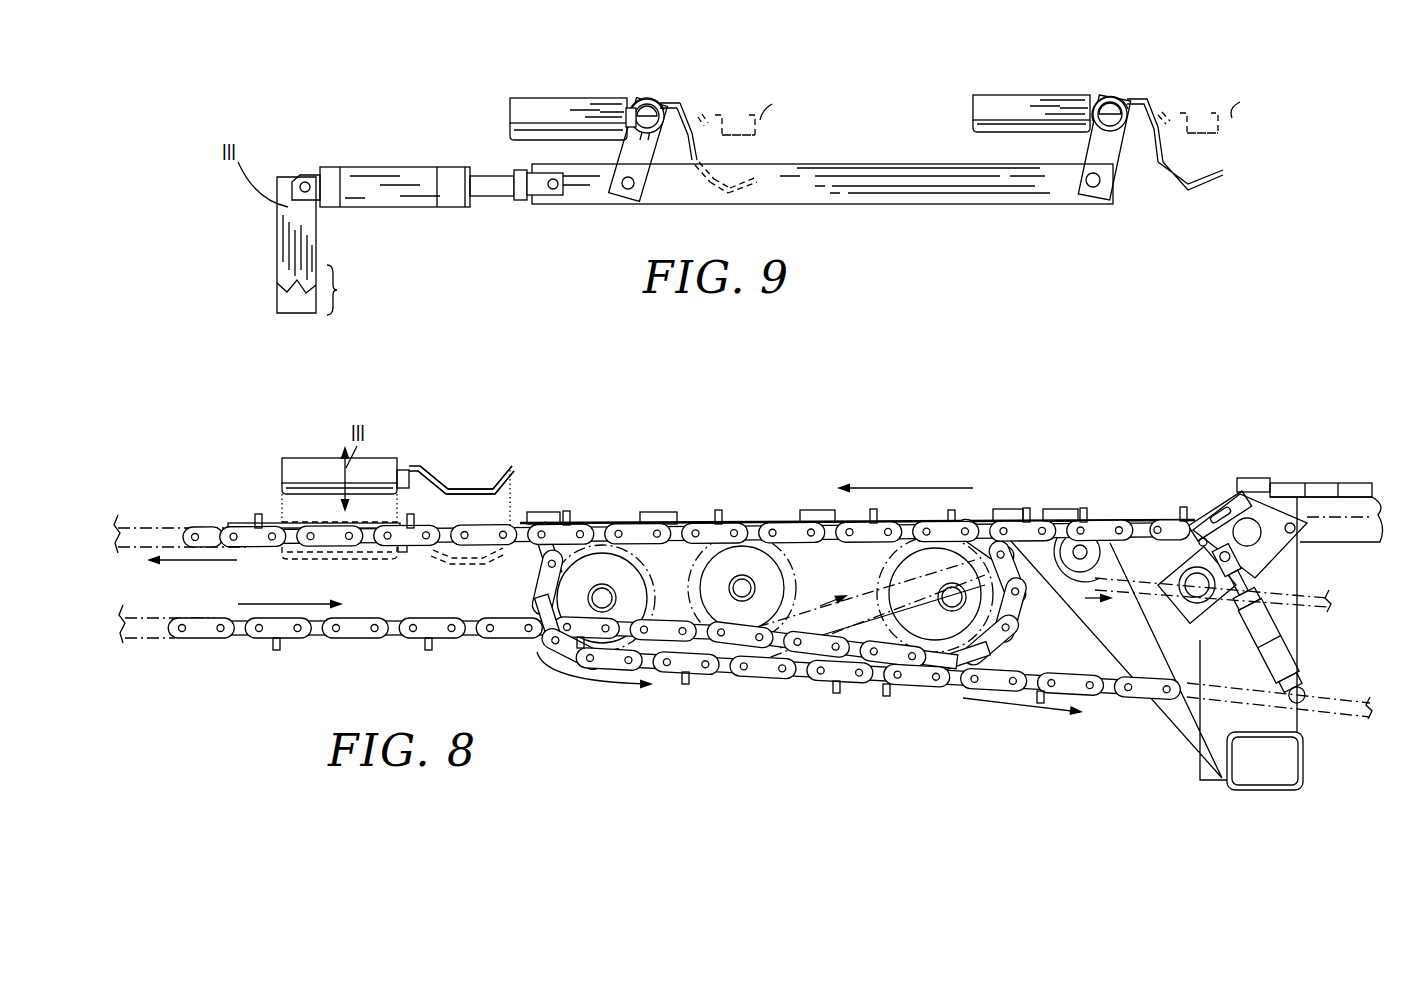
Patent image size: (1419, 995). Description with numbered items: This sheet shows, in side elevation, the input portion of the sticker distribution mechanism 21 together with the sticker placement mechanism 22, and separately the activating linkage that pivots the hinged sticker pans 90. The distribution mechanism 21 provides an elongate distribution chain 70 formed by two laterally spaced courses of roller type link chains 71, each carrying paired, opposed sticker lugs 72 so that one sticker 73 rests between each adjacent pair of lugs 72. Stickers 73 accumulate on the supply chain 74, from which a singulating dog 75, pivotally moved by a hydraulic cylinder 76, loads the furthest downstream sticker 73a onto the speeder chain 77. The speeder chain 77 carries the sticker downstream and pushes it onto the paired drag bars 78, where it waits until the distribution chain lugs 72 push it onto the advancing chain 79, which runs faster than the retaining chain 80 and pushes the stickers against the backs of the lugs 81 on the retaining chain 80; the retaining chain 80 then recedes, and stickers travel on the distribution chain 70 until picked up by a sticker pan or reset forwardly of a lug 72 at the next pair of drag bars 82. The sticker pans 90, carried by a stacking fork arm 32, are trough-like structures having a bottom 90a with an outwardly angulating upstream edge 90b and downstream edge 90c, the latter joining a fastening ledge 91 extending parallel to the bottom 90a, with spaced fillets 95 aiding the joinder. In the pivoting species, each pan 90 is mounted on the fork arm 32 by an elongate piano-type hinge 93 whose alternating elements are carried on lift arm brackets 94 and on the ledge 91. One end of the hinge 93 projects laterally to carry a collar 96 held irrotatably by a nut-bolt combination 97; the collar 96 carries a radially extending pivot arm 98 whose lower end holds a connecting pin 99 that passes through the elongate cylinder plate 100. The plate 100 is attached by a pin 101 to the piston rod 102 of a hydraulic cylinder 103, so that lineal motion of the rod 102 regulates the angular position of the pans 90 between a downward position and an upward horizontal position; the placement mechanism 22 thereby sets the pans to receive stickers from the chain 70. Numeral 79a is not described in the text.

In FIG. 8, the sticker distribution mechanism 21 is at (158, 524).
In FIG. 9, the sticker placement mechanism 22 is at (785, 110).
In FIG. 8, the sticker placement mechanism 22 is at (502, 462).
In FIG. 9, the stacking fork arm 32 is at (582, 108).
In FIG. 8, the stacking fork arm 32 is at (323, 468).
In FIG. 8, the distribution chain 70 is at (140, 612).
In FIG. 8, the roller type link chains 71 is at (365, 620).
In FIG. 8, the sticker lugs 72 is at (570, 513).
In FIG. 9, the stickers 73 is at (733, 118).
In FIG. 8, the stickers 73 is at (1355, 487).
In FIG. 8, the furthest downstream sticker 73a is at (1258, 478).
In FIG. 8, the supply chain 74 is at (1380, 524).
In FIG. 8, the singulating dog 75 is at (1278, 535).
In FIG. 8, the hydraulic cylinder 76 is at (1272, 635).
In FIG. 8, the speeder chain 77 is at (1130, 580).
In FIG. 8, the drag bars 78 is at (1105, 530).
In FIG. 8, the advancing chain 79 is at (892, 598).
In FIG. 8, the intermediate sprocket 79a is at (948, 510).
In FIG. 8, the retaining chain 80 is at (757, 664).
In FIG. 8, the lugs 81 is at (642, 511).
In FIG. 8, the drag bars 82 is at (278, 525).
In FIG. 9, the sticker pans 90 is at (1172, 185).
In FIG. 8, the sticker pans 90 is at (508, 468).
In FIG. 9, the bottom 90a is at (710, 190).
In FIG. 8, the bottom 90a is at (476, 488).
In FIG. 9, the upstream edge 90b is at (748, 190).
In FIG. 8, the upstream edge 90b is at (517, 488).
In FIG. 9, the downstream edge 90c is at (697, 157).
In FIG. 8, the downstream edge 90c is at (430, 478).
In FIG. 9, the fastening ledge 91 is at (682, 104).
In FIG. 8, the fastening ledge 91 is at (407, 468).
In FIG. 9, the piano-type hinge 93 is at (660, 108).
In FIG. 9, the lift arm brackets 94 is at (634, 108).
In FIG. 9, the fillets 95 is at (696, 167).
In FIG. 8, the fillets 95 is at (412, 484).
In FIG. 9, the collar 96 is at (655, 99).
In FIG. 9, the nut-bolt combination 97 is at (634, 127).
In FIG. 9, the pivot arm 98 is at (645, 160).
In FIG. 9, the connecting pin 99 is at (622, 193).
In FIG. 9, the cylinder plate 100 is at (973, 183).
In FIG. 9, the pin 101 is at (550, 182).
In FIG. 9, the piston rod 102 is at (500, 182).
In FIG. 9, the hydraulic cylinder 103 is at (403, 180).